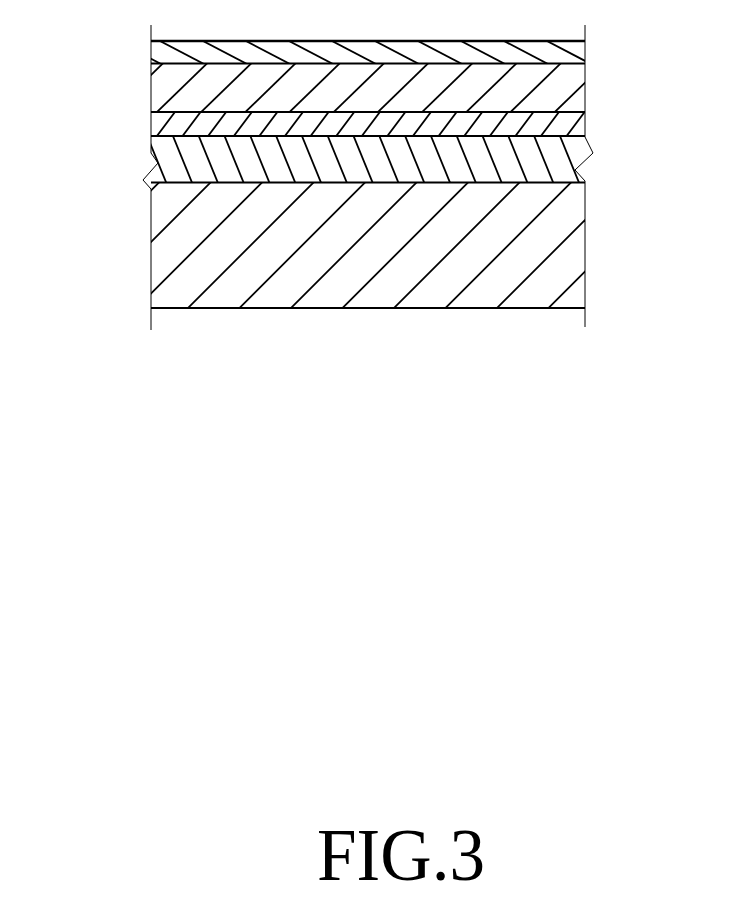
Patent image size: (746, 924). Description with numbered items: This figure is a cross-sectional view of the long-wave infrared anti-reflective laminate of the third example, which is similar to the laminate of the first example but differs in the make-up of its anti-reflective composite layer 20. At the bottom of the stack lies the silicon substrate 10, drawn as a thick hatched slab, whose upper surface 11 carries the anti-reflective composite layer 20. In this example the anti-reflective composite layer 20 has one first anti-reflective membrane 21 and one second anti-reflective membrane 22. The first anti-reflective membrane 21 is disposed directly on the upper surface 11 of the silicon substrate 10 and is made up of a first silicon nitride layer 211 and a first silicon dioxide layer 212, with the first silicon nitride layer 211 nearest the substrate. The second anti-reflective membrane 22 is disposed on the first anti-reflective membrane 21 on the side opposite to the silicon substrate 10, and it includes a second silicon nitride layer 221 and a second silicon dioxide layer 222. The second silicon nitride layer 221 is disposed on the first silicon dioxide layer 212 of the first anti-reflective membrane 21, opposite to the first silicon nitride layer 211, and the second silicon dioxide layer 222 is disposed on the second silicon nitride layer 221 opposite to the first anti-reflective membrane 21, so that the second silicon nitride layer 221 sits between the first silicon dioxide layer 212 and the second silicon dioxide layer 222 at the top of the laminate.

The silicon substrate 10 is at (572, 245).
The upper surface 11 is at (157, 171).
The anti-reflective composite layer 20 is at (378, 106).
The first anti-reflective membrane 21 is at (345, 142).
The first silicon nitride layer 211 is at (168, 150).
The first silicon dioxide layer 212 is at (163, 121).
The second anti-reflective membrane 22 is at (349, 71).
The second silicon nitride layer 221 is at (173, 92).
The second silicon dioxide layer 222 is at (163, 54).